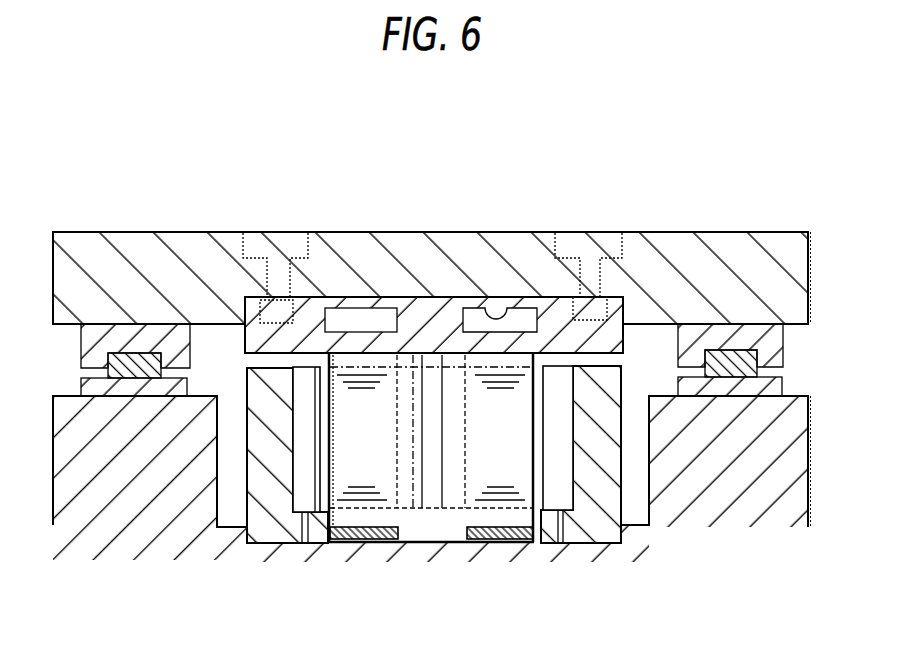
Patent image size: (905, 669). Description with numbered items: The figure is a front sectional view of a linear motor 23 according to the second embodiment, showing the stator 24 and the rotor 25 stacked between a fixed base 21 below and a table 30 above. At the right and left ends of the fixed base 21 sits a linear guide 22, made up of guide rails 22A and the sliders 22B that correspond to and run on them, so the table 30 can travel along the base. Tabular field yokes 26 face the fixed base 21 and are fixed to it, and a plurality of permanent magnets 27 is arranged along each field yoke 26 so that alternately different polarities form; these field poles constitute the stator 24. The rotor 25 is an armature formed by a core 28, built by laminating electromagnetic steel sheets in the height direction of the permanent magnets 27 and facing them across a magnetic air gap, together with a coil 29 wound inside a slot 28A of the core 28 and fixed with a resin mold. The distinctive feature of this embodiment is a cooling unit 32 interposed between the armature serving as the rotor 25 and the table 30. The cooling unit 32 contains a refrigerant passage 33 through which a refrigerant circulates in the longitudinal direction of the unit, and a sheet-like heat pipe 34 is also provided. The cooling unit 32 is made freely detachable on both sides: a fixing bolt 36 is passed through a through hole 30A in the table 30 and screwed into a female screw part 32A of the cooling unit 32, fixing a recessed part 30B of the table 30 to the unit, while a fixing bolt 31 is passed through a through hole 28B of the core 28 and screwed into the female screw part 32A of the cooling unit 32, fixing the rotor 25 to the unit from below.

The fixed base 21 is at (147, 495).
The linear guide 22 is at (725, 266).
The guide rail 22A is at (720, 352).
The slider 22B is at (697, 327).
The linear motor 23 is at (447, 392).
The stator 24 is at (638, 517).
The rotor 25 is at (455, 510).
The field yoke 26 is at (283, 530).
The permanent magnet 27 is at (310, 522).
The core 28 is at (521, 462).
The slot 28A is at (398, 520).
The through hole 28B is at (442, 400).
The coil 29 is at (516, 522).
The table 30 is at (636, 250).
The through hole 30A is at (596, 320).
The recessed part 30B is at (549, 296).
The fixing bolt 31 is at (432, 508).
The cooling unit 32 is at (434, 269).
The female screw part 32A is at (278, 323).
The refrigerant passage 33 is at (496, 302).
The sheet-like heat pipe 34 is at (362, 545).
The fixing bolt 36 is at (253, 250).